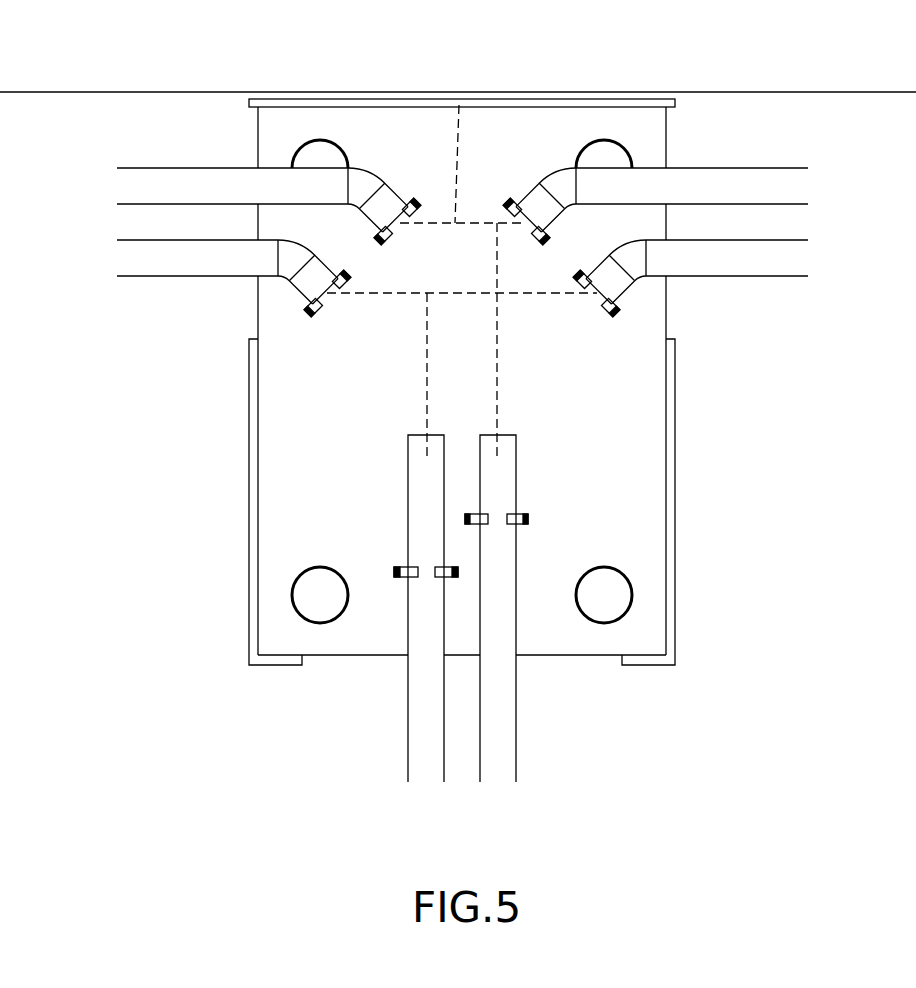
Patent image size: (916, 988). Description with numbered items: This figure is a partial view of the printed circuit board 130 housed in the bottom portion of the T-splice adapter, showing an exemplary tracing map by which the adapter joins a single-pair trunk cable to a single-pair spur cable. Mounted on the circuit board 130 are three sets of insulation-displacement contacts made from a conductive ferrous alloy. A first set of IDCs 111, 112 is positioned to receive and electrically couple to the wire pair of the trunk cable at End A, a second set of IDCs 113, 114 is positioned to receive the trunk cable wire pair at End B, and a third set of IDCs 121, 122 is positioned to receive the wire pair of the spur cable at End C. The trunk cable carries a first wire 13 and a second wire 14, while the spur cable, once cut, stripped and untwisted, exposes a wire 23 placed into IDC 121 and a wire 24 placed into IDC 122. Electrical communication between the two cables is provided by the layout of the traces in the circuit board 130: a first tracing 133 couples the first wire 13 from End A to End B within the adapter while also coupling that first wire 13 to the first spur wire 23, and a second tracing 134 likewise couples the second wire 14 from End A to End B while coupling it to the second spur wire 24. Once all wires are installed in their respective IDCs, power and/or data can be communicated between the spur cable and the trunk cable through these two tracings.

The first wire 13 is at (157, 257).
The second wire 14 is at (203, 183).
The wire 23 is at (428, 525).
The wire 24 is at (500, 600).
The insulation-displacement contact 111 is at (310, 307).
The insulation-displacement contact 112 is at (417, 203).
The insulation-displacement contact 113 is at (615, 310).
The insulation-displacement contact 114 is at (512, 203).
The insulation-displacement contact 121 is at (405, 577).
The insulation-displacement contact 122 is at (527, 522).
The circuit board 130 is at (637, 468).
The first tracing 133 is at (408, 277).
The second tracing 134 is at (459, 105).